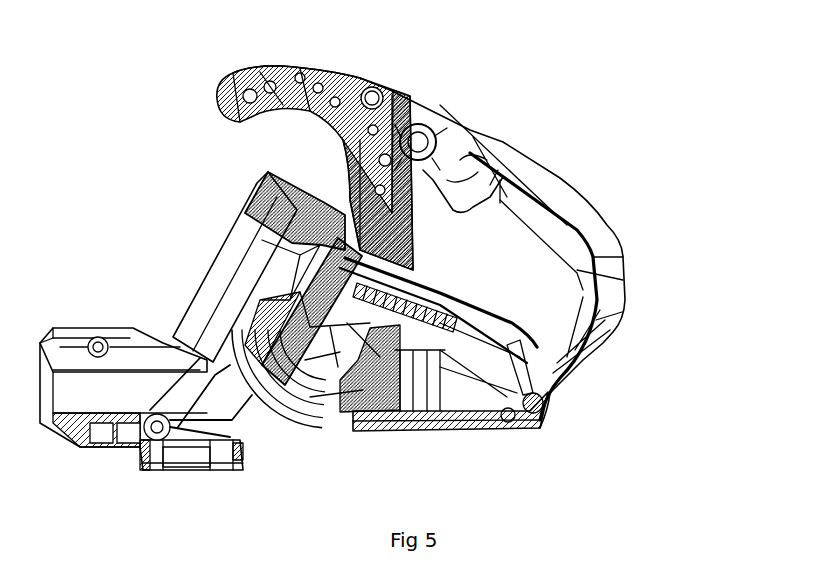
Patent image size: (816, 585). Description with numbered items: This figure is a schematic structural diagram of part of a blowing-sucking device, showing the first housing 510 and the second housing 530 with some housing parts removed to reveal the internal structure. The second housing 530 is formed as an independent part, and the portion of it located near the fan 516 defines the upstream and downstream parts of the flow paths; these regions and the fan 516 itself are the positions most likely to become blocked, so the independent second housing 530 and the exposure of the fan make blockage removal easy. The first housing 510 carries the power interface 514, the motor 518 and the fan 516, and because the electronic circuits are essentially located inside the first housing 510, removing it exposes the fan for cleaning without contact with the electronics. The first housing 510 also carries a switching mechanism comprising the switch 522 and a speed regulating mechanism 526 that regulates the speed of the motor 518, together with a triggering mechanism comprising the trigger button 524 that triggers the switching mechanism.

The first housing 510 is at (660, 268).
The power interface 514 is at (443, 433).
The fan 516 is at (260, 290).
The motor 518 is at (338, 365).
The switch 522 is at (351, 82).
The trigger button 524 is at (463, 197).
The speed regulating mechanism 526 is at (420, 138).
The second housing 530 is at (190, 175).